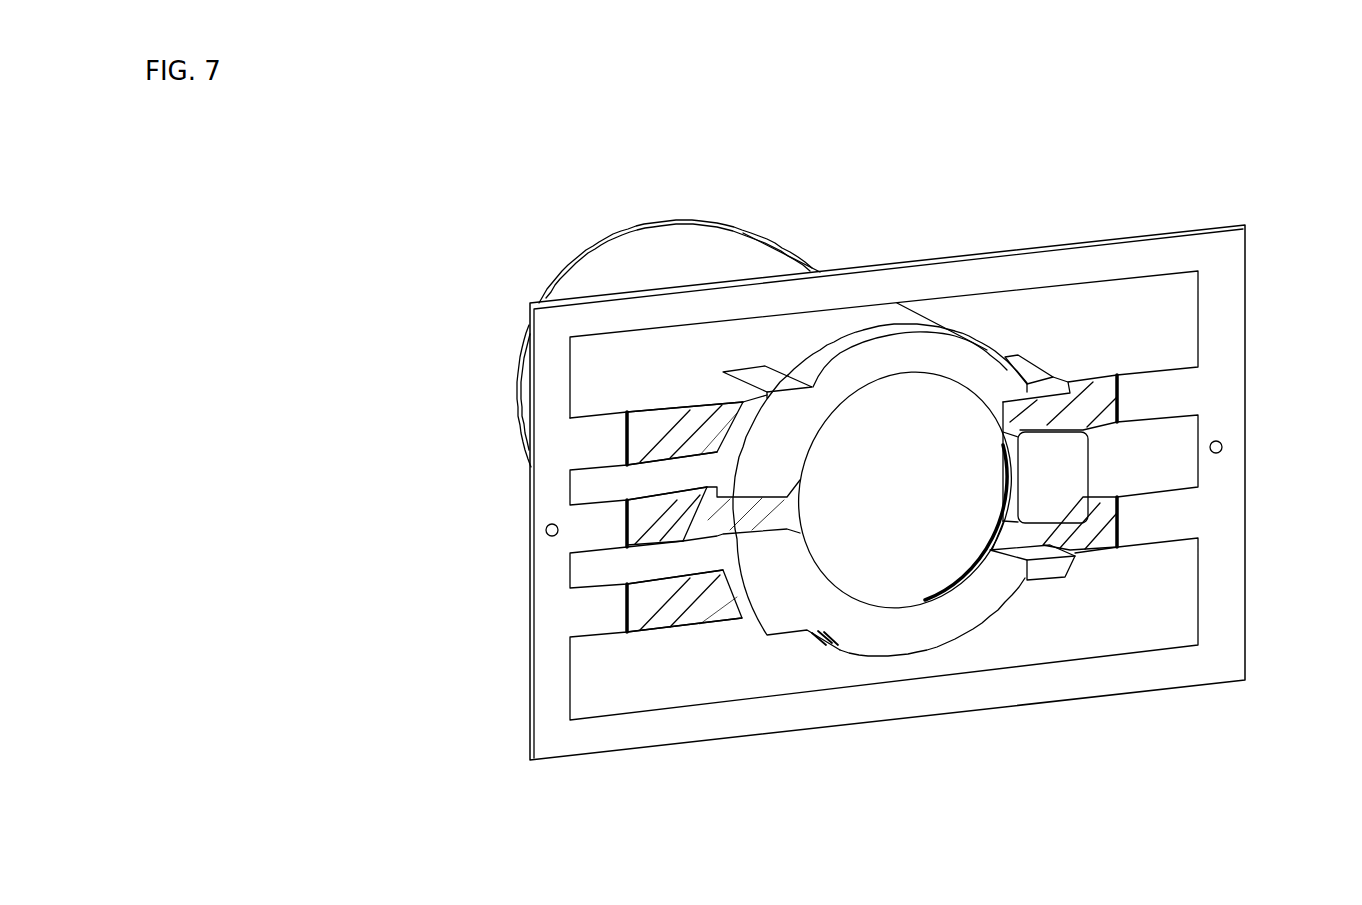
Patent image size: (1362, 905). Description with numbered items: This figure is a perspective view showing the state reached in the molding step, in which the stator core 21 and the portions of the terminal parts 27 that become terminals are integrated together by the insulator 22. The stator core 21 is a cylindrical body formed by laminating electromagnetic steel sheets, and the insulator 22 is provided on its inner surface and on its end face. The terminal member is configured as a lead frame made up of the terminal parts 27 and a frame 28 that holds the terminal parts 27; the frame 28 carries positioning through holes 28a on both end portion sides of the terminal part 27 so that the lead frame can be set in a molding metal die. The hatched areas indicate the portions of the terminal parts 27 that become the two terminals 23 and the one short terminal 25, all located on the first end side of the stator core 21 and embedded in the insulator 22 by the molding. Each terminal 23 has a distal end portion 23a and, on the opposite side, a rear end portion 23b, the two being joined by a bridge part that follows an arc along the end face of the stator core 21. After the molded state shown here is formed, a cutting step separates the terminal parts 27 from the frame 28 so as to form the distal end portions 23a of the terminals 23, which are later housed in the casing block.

The stator core 21 is at (746, 262).
The insulator 22 is at (978, 622).
The terminal 23 is at (1105, 508).
The distal end portion 23a is at (1093, 373).
The rear end portion 23b is at (657, 414).
The short terminal 25 is at (702, 488).
The terminal part 27 is at (643, 452).
The frame 28 is at (1147, 252).
The positioning through hole 28a is at (546, 530).